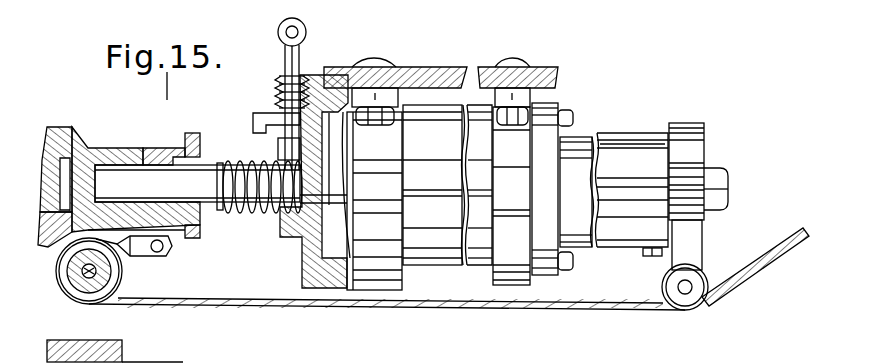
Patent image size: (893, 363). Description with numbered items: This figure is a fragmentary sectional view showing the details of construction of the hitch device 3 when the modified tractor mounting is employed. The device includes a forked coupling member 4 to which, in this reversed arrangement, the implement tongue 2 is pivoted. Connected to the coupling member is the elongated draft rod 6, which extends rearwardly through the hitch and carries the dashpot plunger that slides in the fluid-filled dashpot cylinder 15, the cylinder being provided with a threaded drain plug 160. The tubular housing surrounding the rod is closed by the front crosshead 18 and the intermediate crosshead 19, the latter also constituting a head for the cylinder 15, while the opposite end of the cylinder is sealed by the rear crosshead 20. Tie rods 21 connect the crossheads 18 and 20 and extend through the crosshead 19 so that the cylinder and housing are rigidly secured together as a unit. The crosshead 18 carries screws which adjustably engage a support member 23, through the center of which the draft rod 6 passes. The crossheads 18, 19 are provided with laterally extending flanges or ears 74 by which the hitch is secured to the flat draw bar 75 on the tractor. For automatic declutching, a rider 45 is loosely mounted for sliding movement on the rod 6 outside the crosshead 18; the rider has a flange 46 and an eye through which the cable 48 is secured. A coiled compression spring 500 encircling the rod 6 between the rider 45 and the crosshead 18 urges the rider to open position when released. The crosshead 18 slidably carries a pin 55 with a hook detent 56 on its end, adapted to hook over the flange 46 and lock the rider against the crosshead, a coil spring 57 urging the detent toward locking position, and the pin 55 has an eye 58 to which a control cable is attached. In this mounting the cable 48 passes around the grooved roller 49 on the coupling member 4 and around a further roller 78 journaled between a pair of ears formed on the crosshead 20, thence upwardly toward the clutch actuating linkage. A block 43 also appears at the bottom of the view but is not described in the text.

The implement tongue 2 is at (48, 163).
The forked coupling member 4 is at (84, 148).
The rider 45 is at (163, 148).
The flange 46 is at (197, 140).
The draft rod 6 is at (211, 203).
The coiled compression spring 500 is at (240, 203).
The grooved roller 49 is at (117, 275).
The cable 48 is at (230, 299).
The base block 43 is at (152, 362).
The pin 55 is at (281, 26).
The eye 58 is at (306, 33).
The coil spring 57 is at (283, 96).
The hook detent 56 is at (258, 113).
The support member 23 is at (345, 233).
The front crosshead 18 is at (320, 282).
The flat draw bar 75 is at (452, 68).
The laterally extending flanges or ears 74 is at (395, 90).
The device 3 is at (420, 265).
The intermediate crosshead 19 is at (508, 282).
The dashpot cylinder 15 is at (620, 236).
The tie rods 21 is at (634, 190).
The threaded drain plug 160 is at (648, 258).
The rear crosshead 20 is at (692, 230).
The roller 78 is at (694, 310).